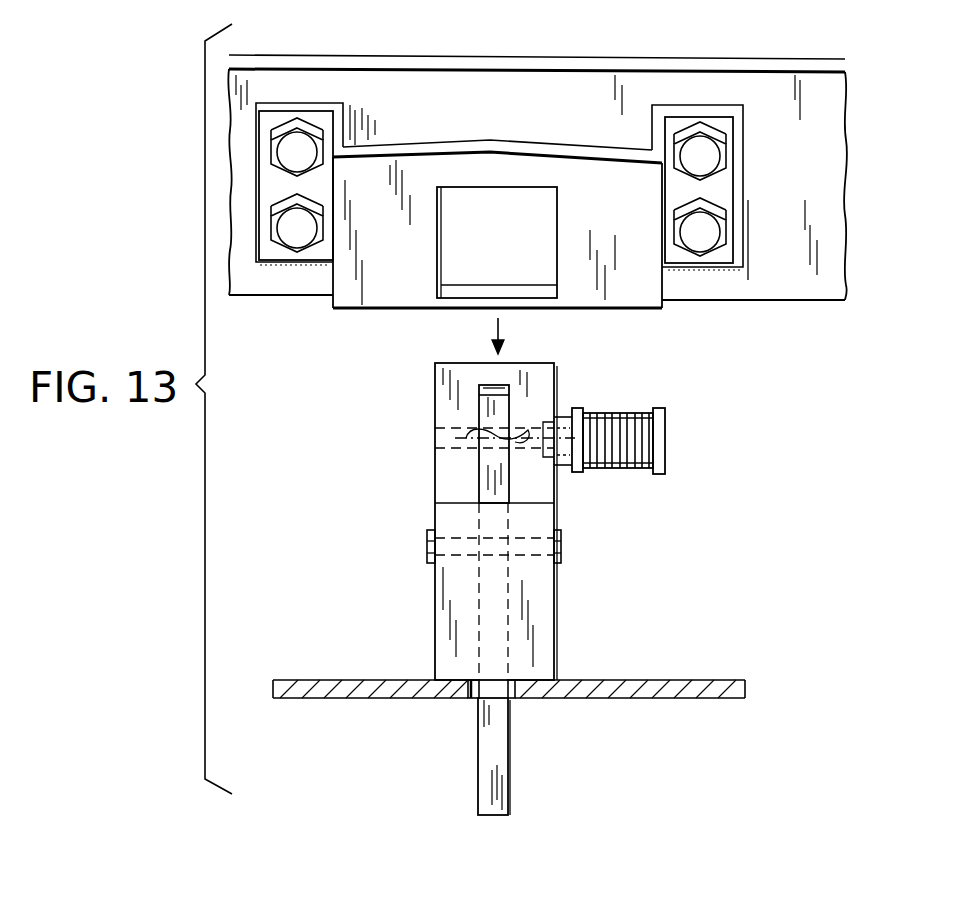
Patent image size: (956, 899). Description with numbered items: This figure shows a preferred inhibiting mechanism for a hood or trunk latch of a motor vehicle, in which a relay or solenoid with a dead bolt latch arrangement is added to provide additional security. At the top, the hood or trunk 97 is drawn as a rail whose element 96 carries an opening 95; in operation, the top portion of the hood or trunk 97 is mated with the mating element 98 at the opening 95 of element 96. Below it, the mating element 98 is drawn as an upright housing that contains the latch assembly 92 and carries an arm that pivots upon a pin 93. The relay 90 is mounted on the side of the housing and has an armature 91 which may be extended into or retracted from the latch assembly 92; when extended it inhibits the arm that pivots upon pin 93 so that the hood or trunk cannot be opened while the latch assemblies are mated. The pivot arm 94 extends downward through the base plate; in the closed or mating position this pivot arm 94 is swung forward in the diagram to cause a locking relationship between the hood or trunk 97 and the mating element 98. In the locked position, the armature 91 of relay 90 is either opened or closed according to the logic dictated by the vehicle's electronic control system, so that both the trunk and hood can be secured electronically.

The hood or trunk 97 is at (735, 64).
The element 96 is at (365, 309).
The opening 95 is at (440, 268).
The relay 90 is at (633, 413).
The armature 91 is at (478, 434).
The latch assembly 92 is at (470, 472).
The pin 93 is at (427, 541).
The mating element 98 is at (425, 582).
The pivot arm 94 is at (478, 750).